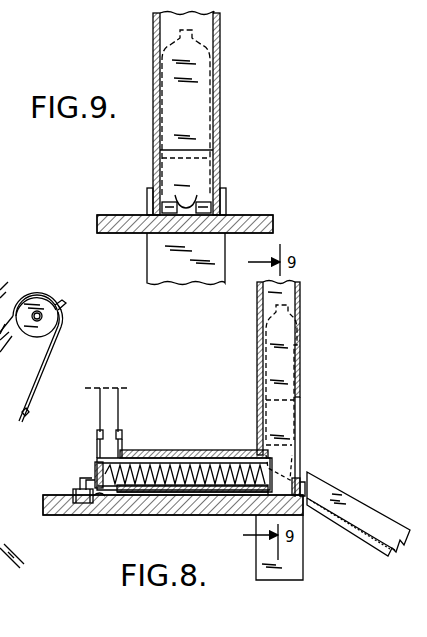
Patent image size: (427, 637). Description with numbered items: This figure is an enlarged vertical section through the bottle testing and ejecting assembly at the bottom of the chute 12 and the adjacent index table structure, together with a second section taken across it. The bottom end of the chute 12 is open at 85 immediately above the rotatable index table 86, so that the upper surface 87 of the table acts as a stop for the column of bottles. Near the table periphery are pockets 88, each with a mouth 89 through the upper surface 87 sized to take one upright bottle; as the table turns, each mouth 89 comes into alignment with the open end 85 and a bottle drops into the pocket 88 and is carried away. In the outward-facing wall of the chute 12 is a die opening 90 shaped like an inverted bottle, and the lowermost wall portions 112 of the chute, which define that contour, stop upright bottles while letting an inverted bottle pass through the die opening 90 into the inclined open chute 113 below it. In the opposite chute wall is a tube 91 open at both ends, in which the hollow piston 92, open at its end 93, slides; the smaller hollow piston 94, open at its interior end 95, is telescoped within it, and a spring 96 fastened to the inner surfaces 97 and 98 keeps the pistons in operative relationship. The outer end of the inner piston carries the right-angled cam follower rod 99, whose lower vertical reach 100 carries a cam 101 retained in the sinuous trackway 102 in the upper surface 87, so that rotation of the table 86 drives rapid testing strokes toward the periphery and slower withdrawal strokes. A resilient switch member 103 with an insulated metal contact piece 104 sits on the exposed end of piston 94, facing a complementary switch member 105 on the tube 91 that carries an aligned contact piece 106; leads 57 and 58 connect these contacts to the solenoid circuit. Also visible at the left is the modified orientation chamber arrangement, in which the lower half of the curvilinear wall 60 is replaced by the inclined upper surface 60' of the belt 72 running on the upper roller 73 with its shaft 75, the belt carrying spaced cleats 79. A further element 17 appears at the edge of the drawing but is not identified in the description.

In FIG. 9, the chute 12 is at (222, 60).
In FIG. 8, the chute 12 is at (301, 330).
In FIG. 8, the frame member 17 is at (12, 543).
In FIG. 8, the lead 57 is at (120, 402).
In FIG. 8, the lead 58 is at (100, 404).
In FIG. 8, the curvilinear wall 60 is at (10, 262).
In FIG. 8, the inclined upper surface 60' is at (18, 279).
In FIG. 8, the belt 72 is at (50, 292).
In FIG. 8, the upper roller 73 is at (50, 326).
In FIG. 8, the shaft 75 is at (40, 319).
In FIG. 8, the cleats 79 is at (4, 340).
In FIG. 9, the open bottom end 85 is at (147, 212).
In FIG. 8, the open bottom end 85 is at (295, 478).
In FIG. 9, the index table 86 is at (278, 222).
In FIG. 8, the index table 86 is at (58, 516).
In FIG. 9, the upper surface 87 is at (103, 214).
In FIG. 8, the upper surface 87 is at (58, 494).
In FIG. 9, the pockets 88 is at (190, 276).
In FIG. 8, the pockets 88 is at (292, 562).
In FIG. 9, the mouth 89 is at (212, 210).
In FIG. 8, the mouth 89 is at (250, 497).
In FIG. 9, the die opening 90 is at (205, 195).
In FIG. 8, the die opening 90 is at (297, 410).
In FIG. 8, the tube 91 is at (185, 458).
In FIG. 8, the hollow piston 92 is at (236, 450).
In FIG. 8, the open end 93 is at (175, 462).
In FIG. 8, the smaller hollow piston 94 is at (138, 489).
In FIG. 8, the interior end 95 is at (190, 461).
In FIG. 8, the spring 96 is at (185, 490).
In FIG. 8, the inner surface 97 is at (272, 472).
In FIG. 8, the inner surface 98 is at (118, 466).
In FIG. 8, the cam follower rod 99 is at (92, 466).
In FIG. 8, the lower vertical reach 100 is at (86, 476).
In FIG. 8, the cam 101 is at (82, 504).
In FIG. 8, the trackway 102 is at (102, 500).
In FIG. 8, the resilient switch member 103 is at (97, 447).
In FIG. 8, the metal contact piece 104 is at (97, 433).
In FIG. 8, the complementary switch member 105 is at (124, 445).
In FIG. 8, the metal contact piece 106 is at (124, 432).
In FIG. 9, the lowermost wall portions 112 is at (208, 200).
In FIG. 8, the lowermost wall portions 112 is at (306, 490).
In FIG. 8, the inclined open chute 113 is at (365, 535).